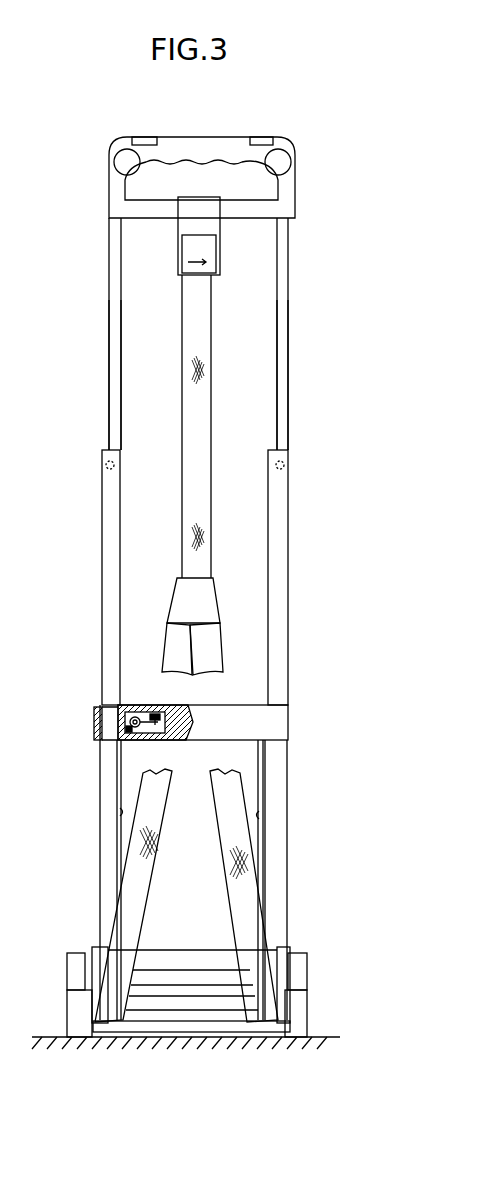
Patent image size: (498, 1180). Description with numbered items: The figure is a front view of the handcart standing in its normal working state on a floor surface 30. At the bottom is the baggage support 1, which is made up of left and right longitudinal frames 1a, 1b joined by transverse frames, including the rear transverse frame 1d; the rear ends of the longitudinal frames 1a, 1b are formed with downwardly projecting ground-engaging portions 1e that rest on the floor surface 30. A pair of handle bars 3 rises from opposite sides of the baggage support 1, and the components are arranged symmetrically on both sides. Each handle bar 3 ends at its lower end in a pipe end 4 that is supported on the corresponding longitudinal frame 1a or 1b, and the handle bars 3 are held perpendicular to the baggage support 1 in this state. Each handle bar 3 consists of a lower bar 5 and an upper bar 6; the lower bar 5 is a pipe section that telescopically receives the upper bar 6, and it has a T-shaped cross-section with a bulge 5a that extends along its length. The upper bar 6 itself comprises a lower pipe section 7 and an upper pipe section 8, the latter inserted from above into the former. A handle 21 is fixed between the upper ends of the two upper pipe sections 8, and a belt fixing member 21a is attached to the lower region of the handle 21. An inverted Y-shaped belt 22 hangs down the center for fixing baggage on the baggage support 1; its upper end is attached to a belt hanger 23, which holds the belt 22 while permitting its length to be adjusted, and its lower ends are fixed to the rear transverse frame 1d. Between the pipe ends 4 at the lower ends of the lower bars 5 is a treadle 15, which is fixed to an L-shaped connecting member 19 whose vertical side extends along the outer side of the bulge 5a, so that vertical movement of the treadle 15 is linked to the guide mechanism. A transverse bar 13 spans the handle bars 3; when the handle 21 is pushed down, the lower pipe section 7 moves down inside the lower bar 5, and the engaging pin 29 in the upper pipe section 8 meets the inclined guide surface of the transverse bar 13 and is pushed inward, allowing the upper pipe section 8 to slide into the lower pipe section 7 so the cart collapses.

The baggage support 1 is at (312, 942).
The left longitudinal frame 1a is at (67, 965).
The right longitudinal frame 1b is at (307, 970).
The rear transverse frame 1d is at (180, 1022).
The ground-engaging portion 1e is at (67, 1020).
The handle bar 3 is at (88, 713).
The pipe end 4 is at (100, 958).
The lower bar 5 is at (100, 796).
The bulge 5a is at (120, 814).
The upper bar 6 is at (94, 402).
The lower pipe section 7 is at (102, 517).
The upper pipe section 8 is at (109, 300).
The transverse bar 13 is at (231, 697).
The treadle 15 is at (220, 950).
The connecting member 19 is at (123, 766).
The handle 21 is at (200, 137).
The belt fixing member 21a is at (222, 222).
The belt 22 is at (212, 395).
The belt hanger 23 is at (210, 266).
The engaging pin 29 is at (106, 466).
The floor surface 30 is at (315, 1037).